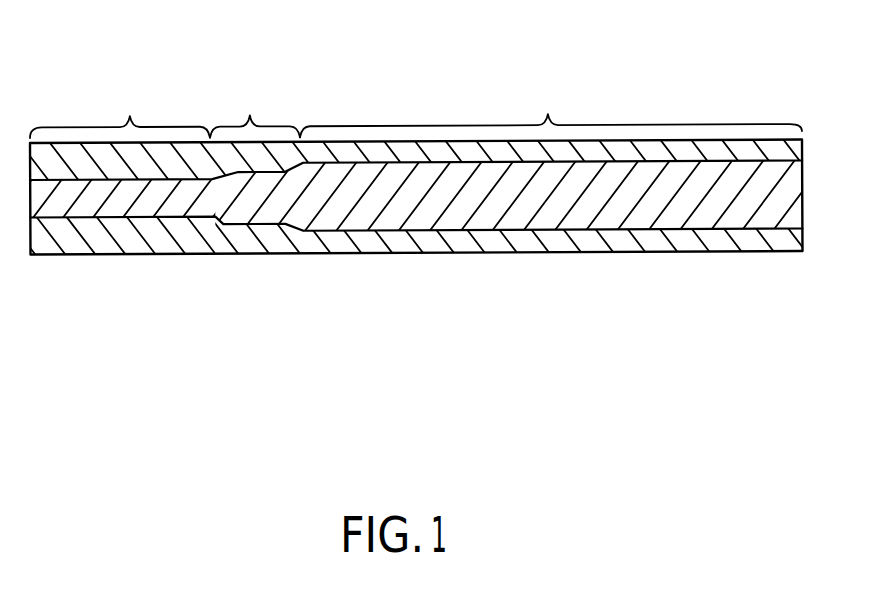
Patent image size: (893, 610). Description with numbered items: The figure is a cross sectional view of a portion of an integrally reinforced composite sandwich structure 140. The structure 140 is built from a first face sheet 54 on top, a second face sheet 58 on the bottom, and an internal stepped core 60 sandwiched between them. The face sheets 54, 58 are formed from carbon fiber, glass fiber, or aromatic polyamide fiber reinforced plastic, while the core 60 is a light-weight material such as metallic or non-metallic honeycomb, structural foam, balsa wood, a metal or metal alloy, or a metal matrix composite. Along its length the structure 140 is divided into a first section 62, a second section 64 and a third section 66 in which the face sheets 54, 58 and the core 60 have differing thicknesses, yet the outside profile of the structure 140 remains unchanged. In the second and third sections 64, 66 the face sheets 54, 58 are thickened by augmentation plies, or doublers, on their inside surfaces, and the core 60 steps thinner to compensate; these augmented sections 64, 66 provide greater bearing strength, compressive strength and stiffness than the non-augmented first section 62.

The integrally reinforced composite sandwich structure 140 is at (350, 60).
The first face sheet 54 is at (397, 143).
The second face sheet 58 is at (385, 255).
The internal stepped core 60 is at (423, 197).
The first section 62 is at (551, 111).
The second section 64 is at (255, 112).
The third section 66 is at (120, 113).